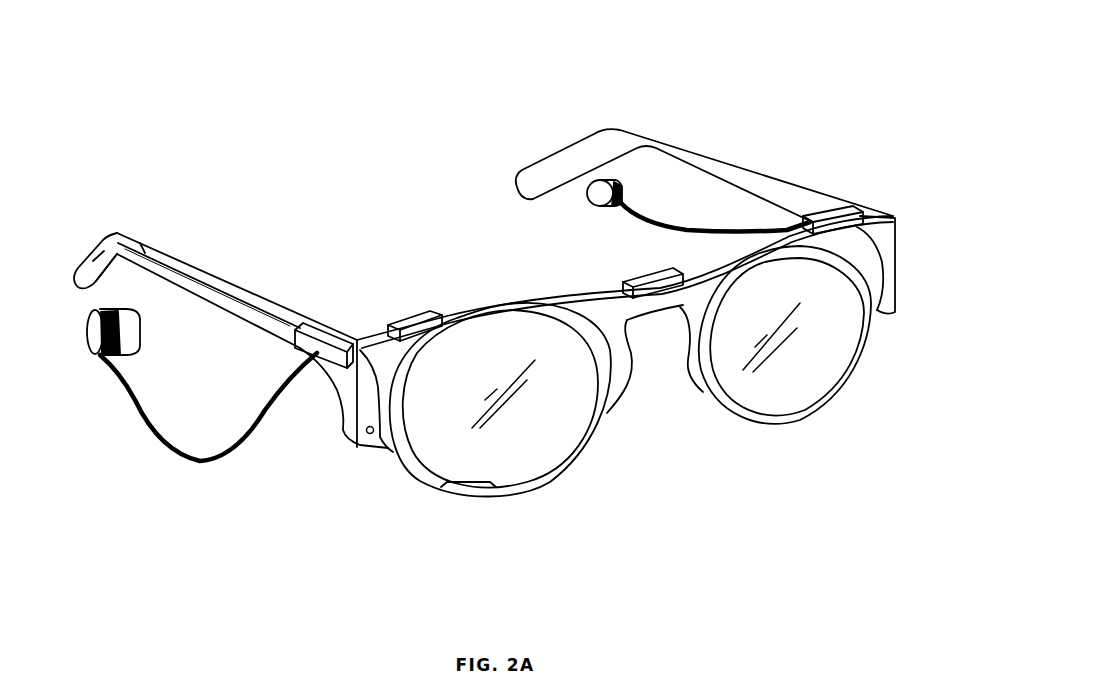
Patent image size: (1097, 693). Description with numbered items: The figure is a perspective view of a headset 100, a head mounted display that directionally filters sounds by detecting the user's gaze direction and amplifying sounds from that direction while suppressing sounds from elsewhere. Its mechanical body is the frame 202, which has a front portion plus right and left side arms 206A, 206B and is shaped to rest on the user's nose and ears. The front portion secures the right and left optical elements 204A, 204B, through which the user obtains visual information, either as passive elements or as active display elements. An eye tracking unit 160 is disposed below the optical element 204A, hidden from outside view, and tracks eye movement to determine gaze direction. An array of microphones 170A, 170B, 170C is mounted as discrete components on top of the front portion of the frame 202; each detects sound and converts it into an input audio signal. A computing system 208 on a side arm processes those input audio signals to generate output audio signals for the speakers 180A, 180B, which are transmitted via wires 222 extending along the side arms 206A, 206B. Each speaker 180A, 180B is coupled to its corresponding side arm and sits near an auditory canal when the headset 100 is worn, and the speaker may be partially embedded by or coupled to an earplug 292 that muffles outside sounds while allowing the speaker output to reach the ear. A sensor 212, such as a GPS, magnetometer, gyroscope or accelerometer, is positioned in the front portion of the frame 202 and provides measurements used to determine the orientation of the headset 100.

The headset 100 is at (374, 156).
The eye tracking unit 160 is at (467, 490).
The microphone 170A is at (420, 310).
The microphone 170B is at (622, 292).
The microphone 170C is at (840, 216).
The speaker 180A is at (100, 358).
The speaker 180B is at (599, 180).
The frame 202 is at (617, 377).
The optical element 204A is at (528, 472).
The optical element 204B is at (805, 398).
The side arm 206A is at (197, 287).
The side arm 206B is at (762, 177).
The computing system 208 is at (318, 326).
The sensor 212 is at (366, 438).
The wire 222 is at (230, 292).
The earplug 292 is at (116, 308).